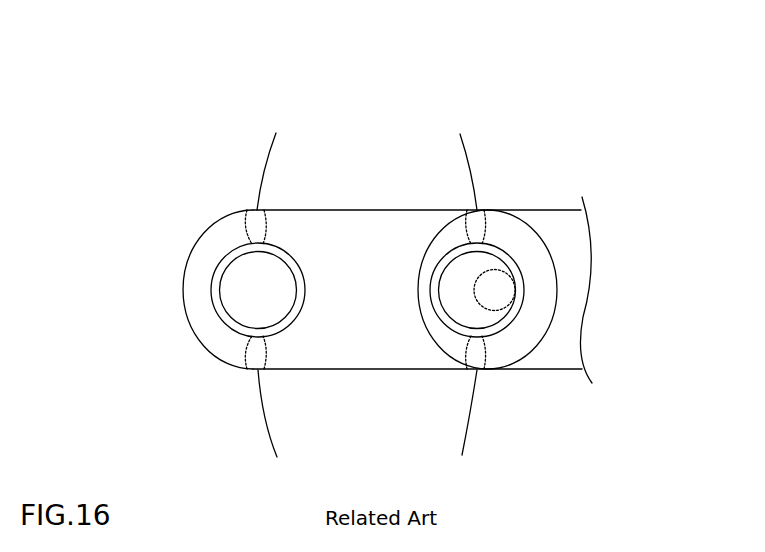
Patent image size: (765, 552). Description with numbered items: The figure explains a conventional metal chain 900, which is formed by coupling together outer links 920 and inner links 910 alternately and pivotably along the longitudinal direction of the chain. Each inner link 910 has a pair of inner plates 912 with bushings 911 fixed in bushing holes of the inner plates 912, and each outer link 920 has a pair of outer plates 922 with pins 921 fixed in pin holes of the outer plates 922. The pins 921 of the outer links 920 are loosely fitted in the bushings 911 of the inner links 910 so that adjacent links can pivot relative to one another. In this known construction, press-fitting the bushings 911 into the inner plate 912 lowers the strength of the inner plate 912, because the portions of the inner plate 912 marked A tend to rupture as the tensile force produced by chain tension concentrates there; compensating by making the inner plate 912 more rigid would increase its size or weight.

The chain 900 is at (101, 108).
The inner link 910 is at (323, 204).
The bushing 911 is at (217, 292).
The inner plate 912 is at (207, 243).
The outer link 920 is at (544, 203).
The pin 921 is at (495, 292).
The outer plate 922 is at (573, 250).